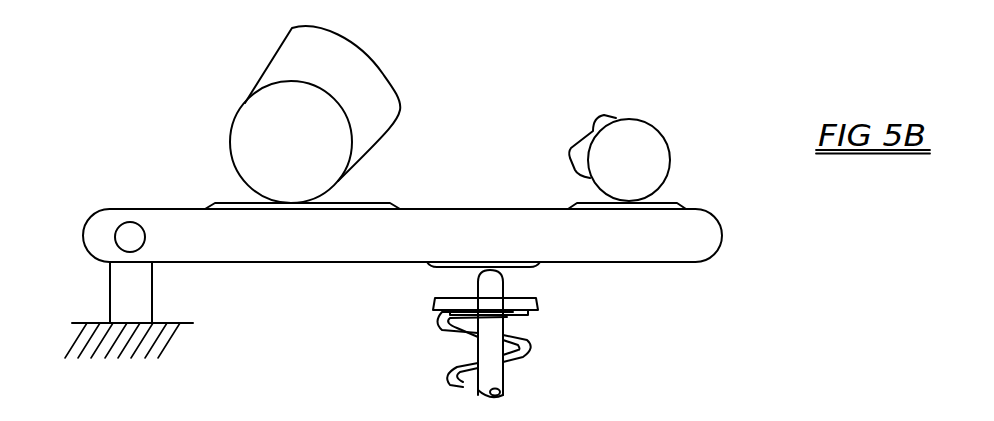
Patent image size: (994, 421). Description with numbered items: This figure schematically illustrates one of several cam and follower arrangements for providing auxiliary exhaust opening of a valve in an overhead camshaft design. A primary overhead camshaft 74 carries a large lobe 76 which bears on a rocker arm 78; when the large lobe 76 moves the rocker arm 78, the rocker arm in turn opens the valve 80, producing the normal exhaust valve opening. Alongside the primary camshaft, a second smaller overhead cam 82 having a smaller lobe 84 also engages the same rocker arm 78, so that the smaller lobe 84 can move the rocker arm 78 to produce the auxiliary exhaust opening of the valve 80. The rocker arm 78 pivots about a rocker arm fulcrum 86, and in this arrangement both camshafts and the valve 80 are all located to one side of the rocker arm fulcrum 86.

The primary overhead camshaft 74 is at (230, 138).
The large lobe 76 is at (362, 52).
The rocker arm 78 is at (273, 262).
The valve 80 is at (503, 373).
The second smaller overhead cam 82 is at (672, 158).
The smaller lobe 84 is at (577, 135).
The rocker arm fulcrum 86 is at (125, 239).